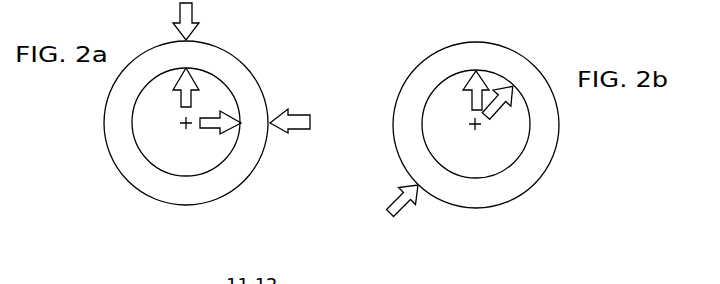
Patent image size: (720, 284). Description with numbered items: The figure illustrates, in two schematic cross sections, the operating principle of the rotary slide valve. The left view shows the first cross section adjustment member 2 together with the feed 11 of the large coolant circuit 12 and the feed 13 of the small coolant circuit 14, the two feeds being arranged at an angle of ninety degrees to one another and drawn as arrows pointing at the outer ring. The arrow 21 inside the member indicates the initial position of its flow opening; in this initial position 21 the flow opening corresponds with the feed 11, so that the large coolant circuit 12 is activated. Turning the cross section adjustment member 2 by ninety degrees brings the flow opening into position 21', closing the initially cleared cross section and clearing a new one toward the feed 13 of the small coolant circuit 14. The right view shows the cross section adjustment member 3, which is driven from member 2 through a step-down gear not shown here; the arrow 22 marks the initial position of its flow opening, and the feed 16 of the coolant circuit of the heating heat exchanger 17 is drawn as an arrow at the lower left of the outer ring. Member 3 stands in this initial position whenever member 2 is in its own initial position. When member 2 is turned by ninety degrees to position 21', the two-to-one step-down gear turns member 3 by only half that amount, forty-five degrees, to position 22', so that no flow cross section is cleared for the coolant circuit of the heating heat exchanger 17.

In FIG. 2a, the first cross section adjustment member 2 is at (146, 160).
In FIG. 2b, the cross section adjustment member 3 is at (514, 163).
In FIG. 2a, the feed of the large coolant circuit 11 is at (222, 20).
In FIG. 2a, the large coolant circuit 12 is at (196, 7).
In FIG. 2a, the feed of the small coolant circuit 13 is at (304, 104).
In FIG. 2a, the small coolant circuit 14 is at (300, 115).
In FIG. 2b, the feed of the coolant circuit of the heating heat exchanger 16 is at (370, 206).
In FIG. 2b, the heating heat exchanger 17 is at (392, 199).
In FIG. 2a, the initial position of the flow opening 21 is at (170, 101).
In FIG. 2a, the turned position of the flow opening 21' is at (209, 141).
In FIG. 2b, the initial position of the flow opening 22 is at (458, 105).
In FIG. 2b, the turned position of the flow opening 22' is at (497, 124).